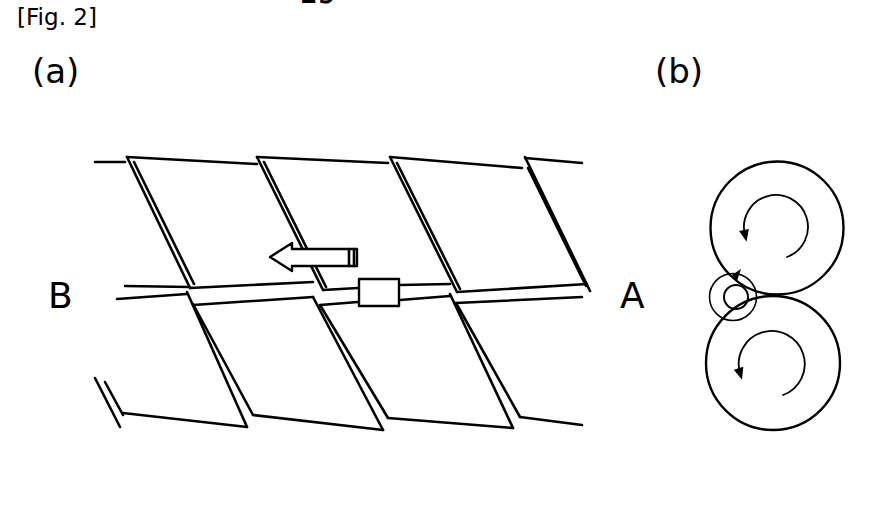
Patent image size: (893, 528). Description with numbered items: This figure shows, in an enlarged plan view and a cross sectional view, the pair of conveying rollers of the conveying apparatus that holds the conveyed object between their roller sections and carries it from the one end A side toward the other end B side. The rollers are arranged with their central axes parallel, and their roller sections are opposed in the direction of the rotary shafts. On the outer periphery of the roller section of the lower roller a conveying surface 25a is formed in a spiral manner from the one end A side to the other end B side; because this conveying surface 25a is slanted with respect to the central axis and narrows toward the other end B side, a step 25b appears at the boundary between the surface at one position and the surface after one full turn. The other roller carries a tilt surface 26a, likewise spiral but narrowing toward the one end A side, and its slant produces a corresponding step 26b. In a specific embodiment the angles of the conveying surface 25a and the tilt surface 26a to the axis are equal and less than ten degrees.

The conveying surface 25a is at (438, 402).
The step 25b is at (393, 418).
The tilt surface 26a is at (313, 180).
The step 26b is at (388, 178).